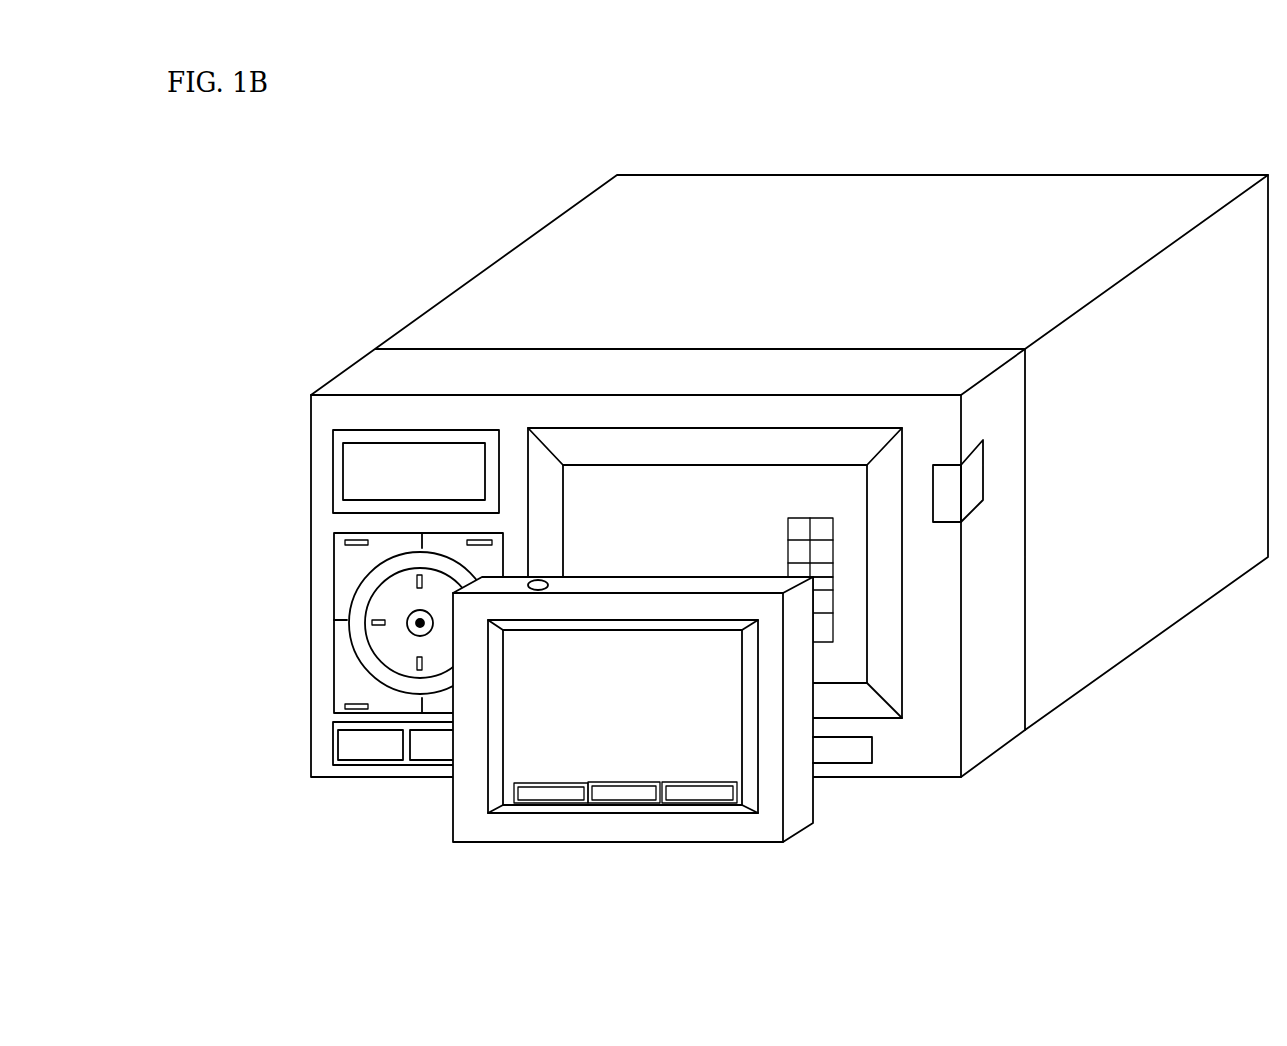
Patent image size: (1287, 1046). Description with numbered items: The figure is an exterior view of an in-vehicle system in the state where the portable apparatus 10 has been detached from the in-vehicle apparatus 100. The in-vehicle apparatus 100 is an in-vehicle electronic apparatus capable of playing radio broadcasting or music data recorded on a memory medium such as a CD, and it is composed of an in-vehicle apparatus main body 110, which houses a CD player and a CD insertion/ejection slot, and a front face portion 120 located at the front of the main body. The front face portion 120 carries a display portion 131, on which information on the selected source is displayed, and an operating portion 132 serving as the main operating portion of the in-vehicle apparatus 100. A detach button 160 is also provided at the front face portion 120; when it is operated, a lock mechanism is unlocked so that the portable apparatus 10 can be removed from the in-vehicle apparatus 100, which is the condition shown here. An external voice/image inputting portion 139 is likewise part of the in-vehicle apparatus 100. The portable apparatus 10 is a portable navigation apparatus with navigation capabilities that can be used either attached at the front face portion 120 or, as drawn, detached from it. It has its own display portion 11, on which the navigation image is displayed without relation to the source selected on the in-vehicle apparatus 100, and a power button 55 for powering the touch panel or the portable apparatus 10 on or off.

The in-vehicle apparatus 100 is at (606, 134).
The in-vehicle apparatus main body 110 is at (805, 220).
The front face portion 120 is at (410, 375).
The display portion 131 is at (348, 463).
The operating portion 132 is at (380, 622).
The external voice/image inputting portion 139 is at (855, 762).
The detach button 160 is at (975, 483).
The portable apparatus 10 is at (535, 739).
The display portion 11 is at (680, 730).
The power button 55 is at (530, 588).